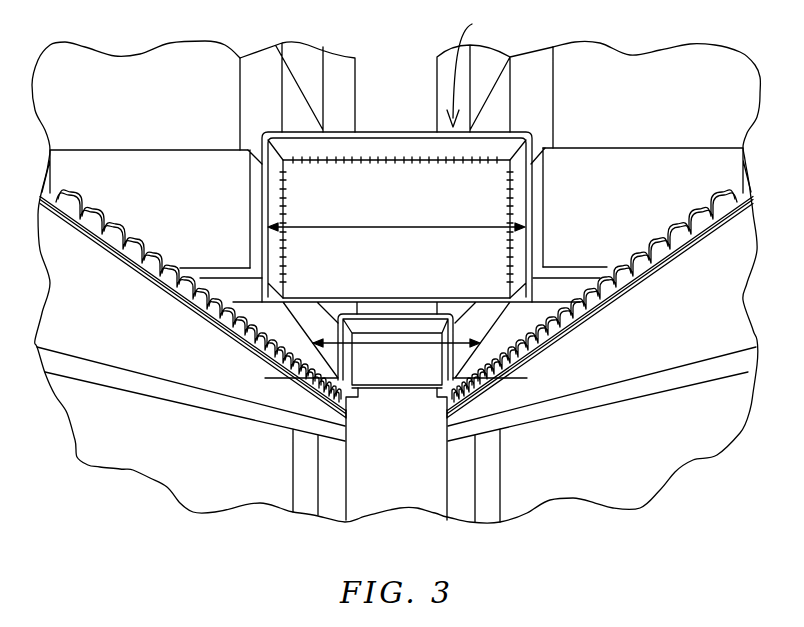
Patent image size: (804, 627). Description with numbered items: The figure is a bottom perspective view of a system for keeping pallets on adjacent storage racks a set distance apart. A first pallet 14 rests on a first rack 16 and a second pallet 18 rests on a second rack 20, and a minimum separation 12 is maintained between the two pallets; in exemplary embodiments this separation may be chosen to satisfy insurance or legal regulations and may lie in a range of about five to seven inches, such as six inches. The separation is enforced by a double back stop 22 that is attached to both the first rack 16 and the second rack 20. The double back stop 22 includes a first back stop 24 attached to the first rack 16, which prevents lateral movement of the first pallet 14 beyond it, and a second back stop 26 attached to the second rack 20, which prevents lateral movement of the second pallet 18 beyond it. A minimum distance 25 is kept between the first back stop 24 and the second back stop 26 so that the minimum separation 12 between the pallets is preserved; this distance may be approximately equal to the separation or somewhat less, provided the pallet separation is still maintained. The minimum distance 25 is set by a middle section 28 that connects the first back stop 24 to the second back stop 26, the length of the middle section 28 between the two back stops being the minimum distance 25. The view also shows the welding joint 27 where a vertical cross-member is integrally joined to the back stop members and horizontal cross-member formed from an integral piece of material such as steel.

The minimum separation 12 is at (398, 343).
The first pallet 14 is at (605, 232).
The first rack 16 is at (650, 348).
The second pallet 18 is at (222, 232).
The second rack 20 is at (117, 320).
The double back stop 22 is at (473, 69).
The first back stop 24 is at (543, 187).
The minimum distance 25 is at (400, 227).
The second back stop 26 is at (252, 187).
The welding joint 27 is at (419, 163).
The middle section 28 is at (383, 131).